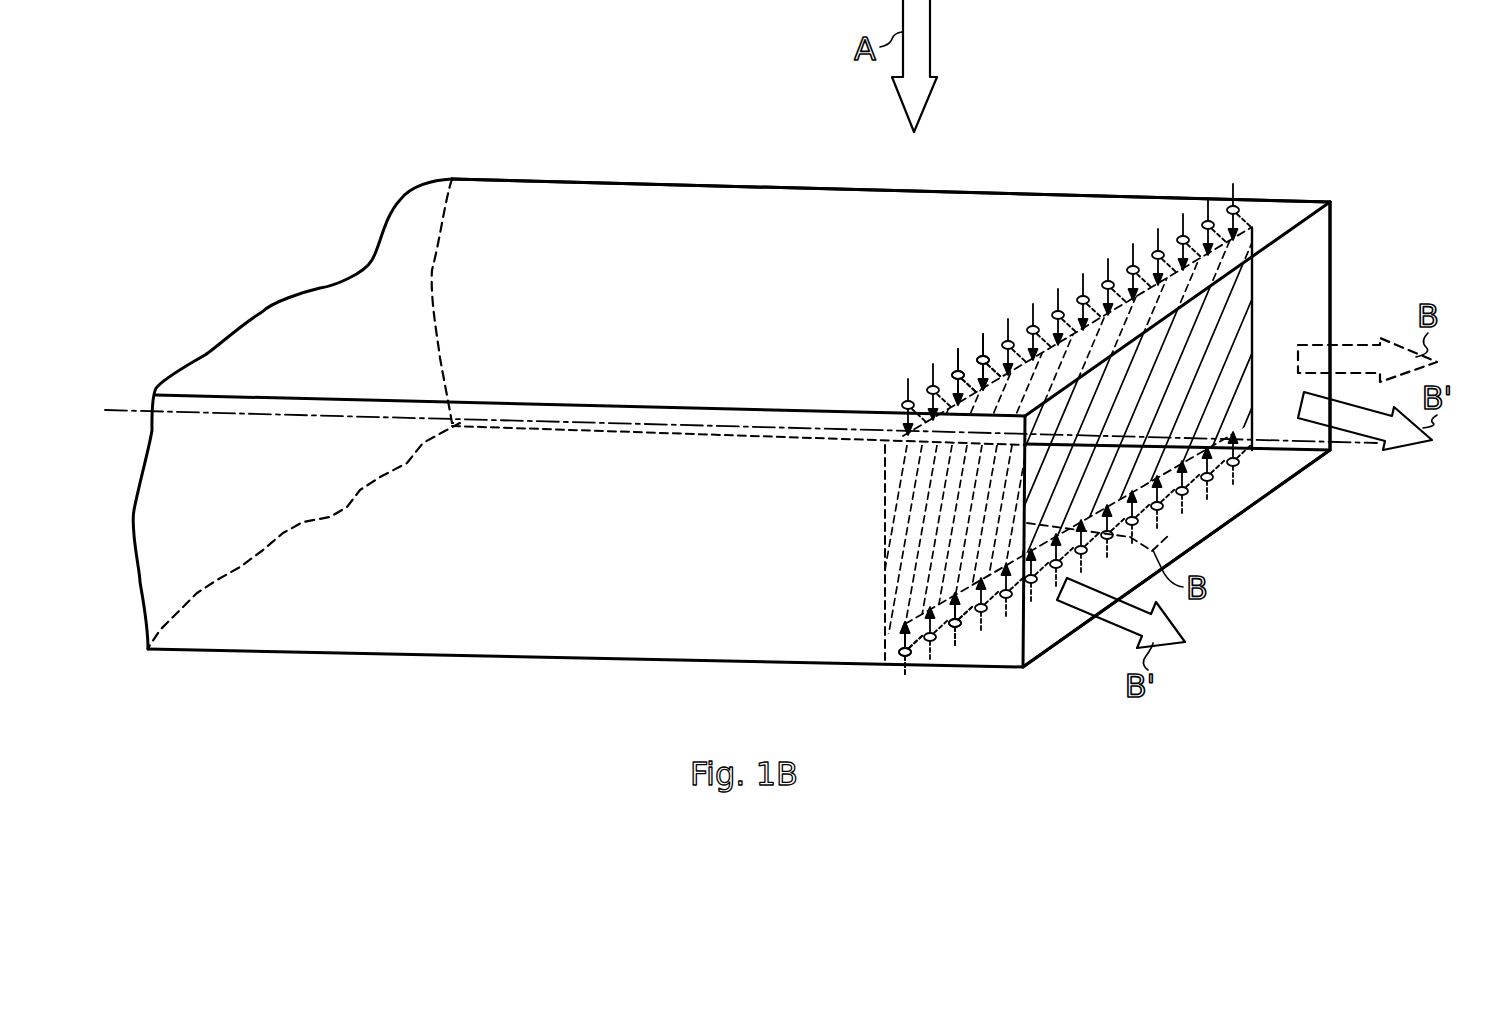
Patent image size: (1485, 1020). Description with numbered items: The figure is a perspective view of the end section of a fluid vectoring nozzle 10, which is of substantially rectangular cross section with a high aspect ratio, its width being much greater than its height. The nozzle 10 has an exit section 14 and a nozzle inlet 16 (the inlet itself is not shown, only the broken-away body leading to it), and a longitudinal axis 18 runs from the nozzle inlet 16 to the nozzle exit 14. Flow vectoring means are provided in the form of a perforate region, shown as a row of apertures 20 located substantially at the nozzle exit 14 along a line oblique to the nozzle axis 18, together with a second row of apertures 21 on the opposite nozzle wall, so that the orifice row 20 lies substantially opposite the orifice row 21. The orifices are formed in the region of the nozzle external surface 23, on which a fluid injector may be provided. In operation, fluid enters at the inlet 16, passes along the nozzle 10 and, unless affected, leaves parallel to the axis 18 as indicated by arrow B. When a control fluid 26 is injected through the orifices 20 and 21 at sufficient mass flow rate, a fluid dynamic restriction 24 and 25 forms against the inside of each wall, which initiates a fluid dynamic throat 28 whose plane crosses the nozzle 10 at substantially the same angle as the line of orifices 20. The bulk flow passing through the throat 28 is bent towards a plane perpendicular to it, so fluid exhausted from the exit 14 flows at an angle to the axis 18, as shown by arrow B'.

The fluid vectoring nozzle 10 is at (606, 126).
The nozzle exit section 14 is at (1396, 198).
The nozzle inlet 16 is at (195, 318).
The longitudinal axis 18 is at (1353, 442).
The perforate region / row of apertures 20 is at (1240, 202).
The second row of apertures 21 is at (897, 651).
The nozzle external surface 23 is at (1065, 207).
The fluid dynamic restriction 24 is at (1255, 250).
The fluid dynamic restriction 25 is at (1030, 607).
The control fluid 26 is at (957, 349).
The fluid dynamic throat 28 is at (1252, 406).